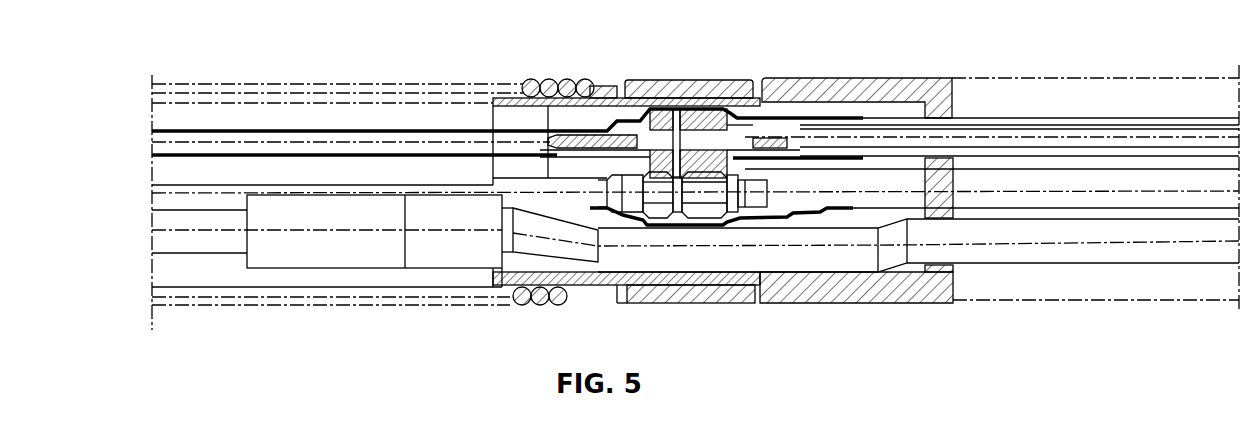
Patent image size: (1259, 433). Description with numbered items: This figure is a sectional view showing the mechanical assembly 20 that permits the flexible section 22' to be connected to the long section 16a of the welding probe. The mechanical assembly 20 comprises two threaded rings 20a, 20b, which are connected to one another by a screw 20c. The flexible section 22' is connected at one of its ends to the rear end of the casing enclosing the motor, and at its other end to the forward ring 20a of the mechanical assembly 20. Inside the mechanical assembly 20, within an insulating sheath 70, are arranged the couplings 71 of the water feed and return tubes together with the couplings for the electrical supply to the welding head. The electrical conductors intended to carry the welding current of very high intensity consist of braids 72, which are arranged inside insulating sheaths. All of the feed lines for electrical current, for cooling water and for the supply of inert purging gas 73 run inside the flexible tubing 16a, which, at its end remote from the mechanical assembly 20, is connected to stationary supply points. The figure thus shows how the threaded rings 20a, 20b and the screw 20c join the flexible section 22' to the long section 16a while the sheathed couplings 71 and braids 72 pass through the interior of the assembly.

The long section 16a is at (1070, 280).
The mechanical assembly 20 is at (697, 306).
The forward ring 20a is at (607, 97).
The threaded ring 20b is at (823, 93).
The screw 20c is at (690, 84).
The insulating sheath 70 is at (848, 117).
The couplings 71 is at (708, 185).
The braids 72 is at (568, 148).
The inert purging gas supply 73 is at (990, 240).
The flexible section 22' is at (536, 317).